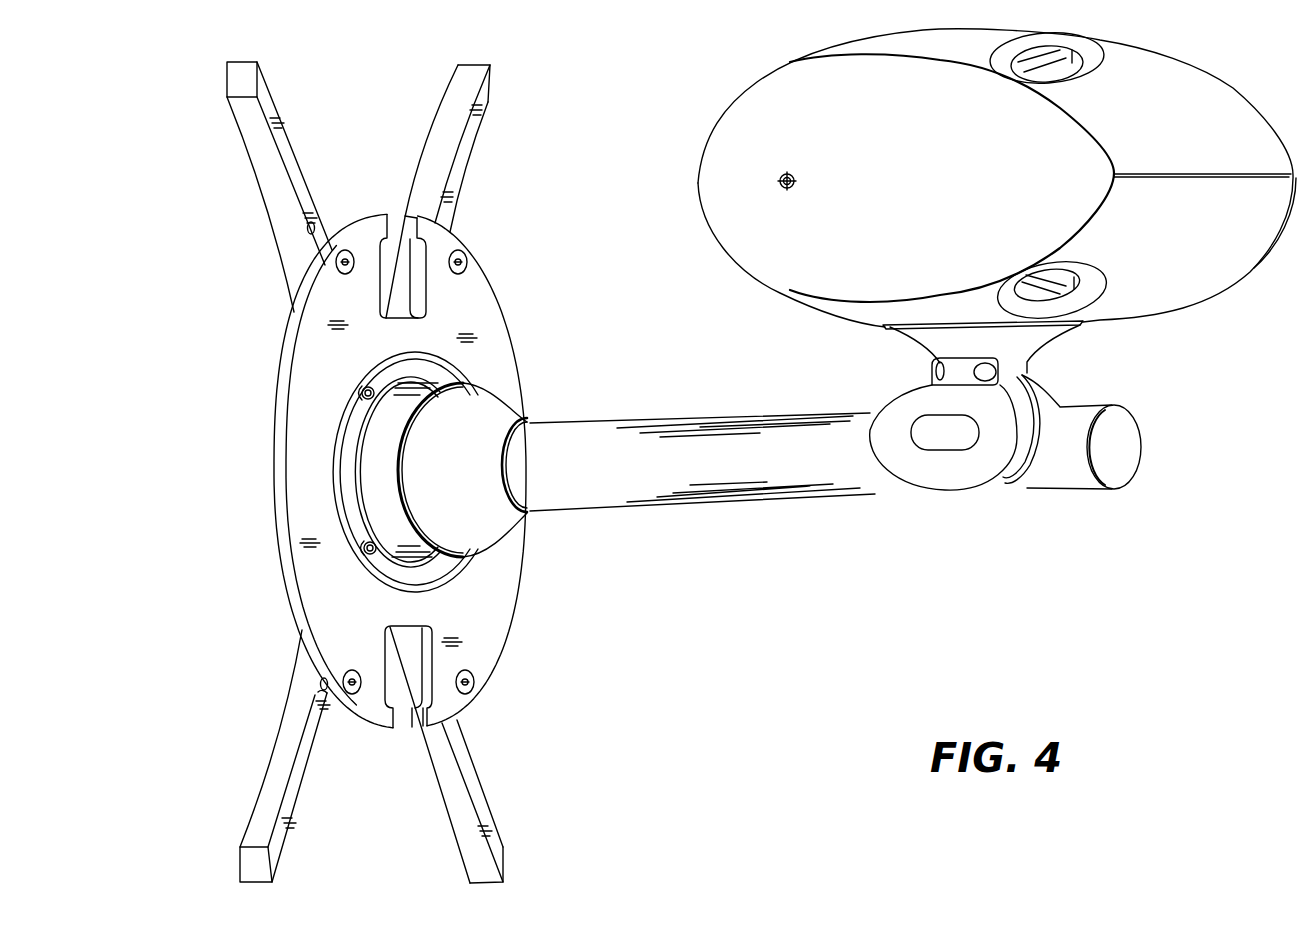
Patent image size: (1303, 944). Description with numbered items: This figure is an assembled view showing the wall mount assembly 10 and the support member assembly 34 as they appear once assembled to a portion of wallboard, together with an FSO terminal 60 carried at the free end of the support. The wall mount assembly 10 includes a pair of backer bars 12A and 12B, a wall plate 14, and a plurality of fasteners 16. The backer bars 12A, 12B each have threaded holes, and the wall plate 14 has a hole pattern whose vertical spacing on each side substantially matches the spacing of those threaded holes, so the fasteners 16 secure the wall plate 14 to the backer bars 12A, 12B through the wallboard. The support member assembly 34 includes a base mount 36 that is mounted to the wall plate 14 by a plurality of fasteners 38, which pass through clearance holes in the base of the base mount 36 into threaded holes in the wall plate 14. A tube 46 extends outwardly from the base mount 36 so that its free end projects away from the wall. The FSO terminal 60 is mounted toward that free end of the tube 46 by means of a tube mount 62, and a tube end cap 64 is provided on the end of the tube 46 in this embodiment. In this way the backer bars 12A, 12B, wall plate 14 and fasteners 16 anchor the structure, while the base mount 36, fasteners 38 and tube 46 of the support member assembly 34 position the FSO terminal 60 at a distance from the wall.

The wall mount assembly 10 is at (520, 664).
The backer bar 12A is at (286, 150).
The backer bar 12B is at (473, 118).
The wall plate 14 is at (483, 318).
The fasteners 16 is at (470, 688).
The support member assembly 34 is at (1157, 548).
The base mount 36 is at (437, 570).
The fasteners 38 is at (374, 393).
The tube 46 is at (617, 437).
The FSO terminal 60 is at (745, 131).
The tube mount 62 is at (967, 473).
The tube end cap 64 is at (1113, 447).